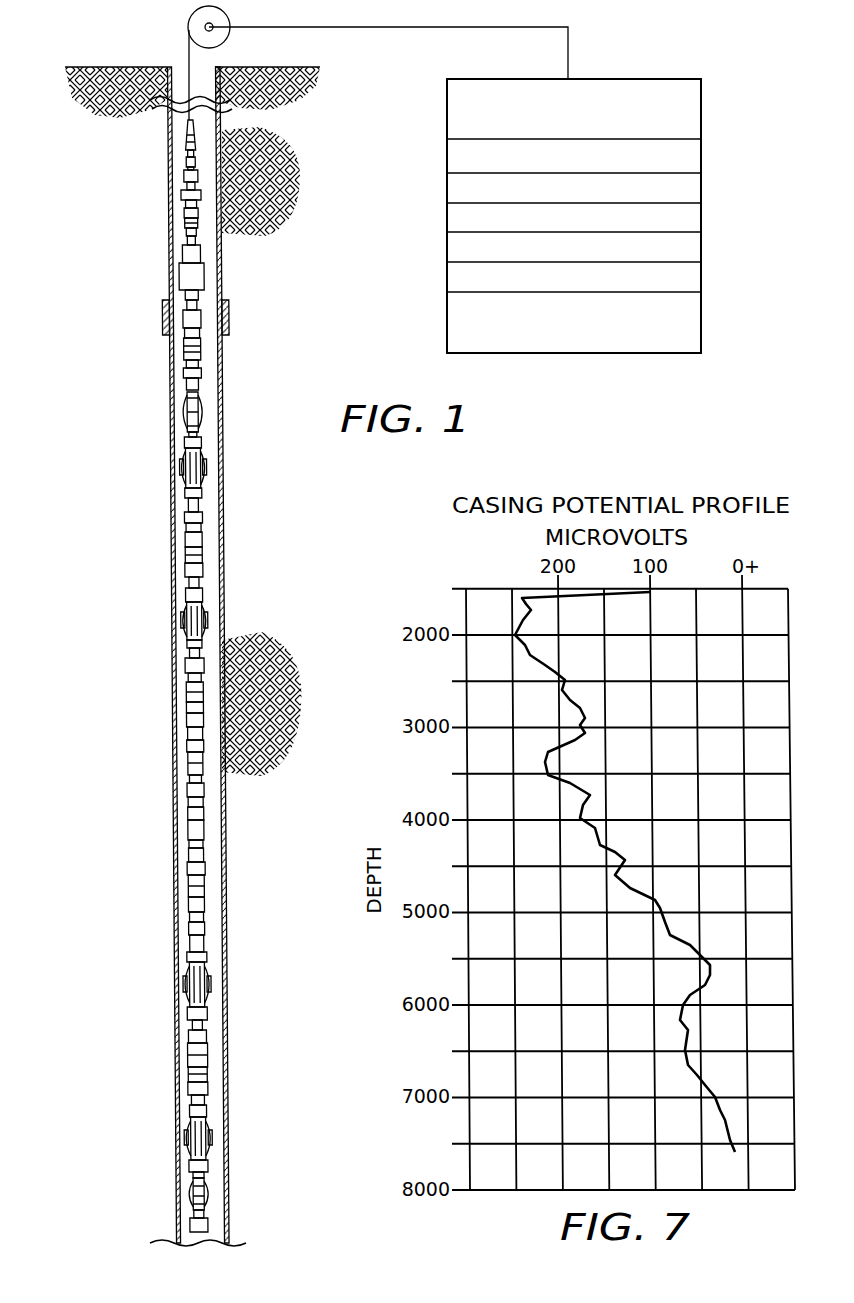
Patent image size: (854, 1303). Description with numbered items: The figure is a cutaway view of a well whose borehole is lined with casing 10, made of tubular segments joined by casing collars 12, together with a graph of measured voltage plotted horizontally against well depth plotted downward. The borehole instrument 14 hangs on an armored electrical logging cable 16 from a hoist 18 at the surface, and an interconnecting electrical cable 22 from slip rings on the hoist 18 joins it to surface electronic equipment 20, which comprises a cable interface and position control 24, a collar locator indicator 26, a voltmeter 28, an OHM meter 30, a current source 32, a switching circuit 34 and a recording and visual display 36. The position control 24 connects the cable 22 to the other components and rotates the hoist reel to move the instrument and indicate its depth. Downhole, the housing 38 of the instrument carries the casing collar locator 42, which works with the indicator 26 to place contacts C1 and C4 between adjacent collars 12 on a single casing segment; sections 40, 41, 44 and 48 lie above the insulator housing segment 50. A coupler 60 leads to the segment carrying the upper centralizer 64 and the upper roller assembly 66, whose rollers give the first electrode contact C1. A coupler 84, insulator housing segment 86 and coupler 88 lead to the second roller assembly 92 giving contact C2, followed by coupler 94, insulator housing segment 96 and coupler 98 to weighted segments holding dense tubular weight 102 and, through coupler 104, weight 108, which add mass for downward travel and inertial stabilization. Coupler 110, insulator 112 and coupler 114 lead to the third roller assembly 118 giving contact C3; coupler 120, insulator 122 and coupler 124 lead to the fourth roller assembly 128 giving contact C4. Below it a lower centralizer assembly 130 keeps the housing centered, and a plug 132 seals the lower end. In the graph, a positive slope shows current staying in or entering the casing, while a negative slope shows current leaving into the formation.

The casing 10 is at (223, 840).
The casing collars 12 is at (227, 320).
The borehole instrument 14 is at (248, 70).
The armored electrical logging cable 16 is at (189, 58).
The hoist 18 is at (185, 22).
The surface electronic equipment 20 is at (660, 72).
The interconnecting electrical cable 22 is at (378, 27).
The cable interface and position control 24 is at (688, 119).
The collar locator indicator 26 is at (678, 161).
The voltmeter 28 is at (674, 187).
The OHM meter 30 is at (676, 218).
The current source 32 is at (690, 248).
The switching circuit 34 is at (694, 279).
The recording and visual display 36 is at (688, 322).
The housing 38 is at (186, 136).
The connector section 40 is at (183, 187).
The connector section 41 is at (184, 215).
The casing collar locator 42 is at (184, 242).
The electronics cartridge 44 is at (175, 273).
The connector sub 48 is at (179, 318).
The insulator housing segment 50 is at (182, 343).
The coupler 60 is at (178, 374).
The upper centralizer 64 is at (175, 412).
The upper roller assembly 66 is at (172, 466).
The coupler 84 is at (180, 518).
The insulator housing segment 86 is at (183, 543).
The coupler 88 is at (179, 571).
The second roller assembly 92 is at (175, 619).
The coupler 94 is at (181, 664).
The insulator housing segment 96 is at (182, 693).
The coupler 98 is at (182, 724).
The weight 102 is at (183, 757).
The coupler 104 is at (180, 794).
The weight 108 is at (182, 829).
The coupler 110 is at (181, 868).
The insulator 112 is at (183, 899).
The coupler 114 is at (174, 927).
The third roller assembly 118 is at (172, 984).
The coupler 120 is at (181, 1035).
The insulator 122 is at (183, 1066).
The coupler 124 is at (176, 1091).
The fourth roller assembly 128 is at (173, 1136).
The lower centralizer assembly 130 is at (179, 1185).
The plug 132 is at (187, 1225).
The first electrode contact C1 is at (209, 466).
The second electrode contact C2 is at (210, 620).
The third electrode contact C3 is at (211, 984).
The fourth electrode contact C4 is at (213, 1137).